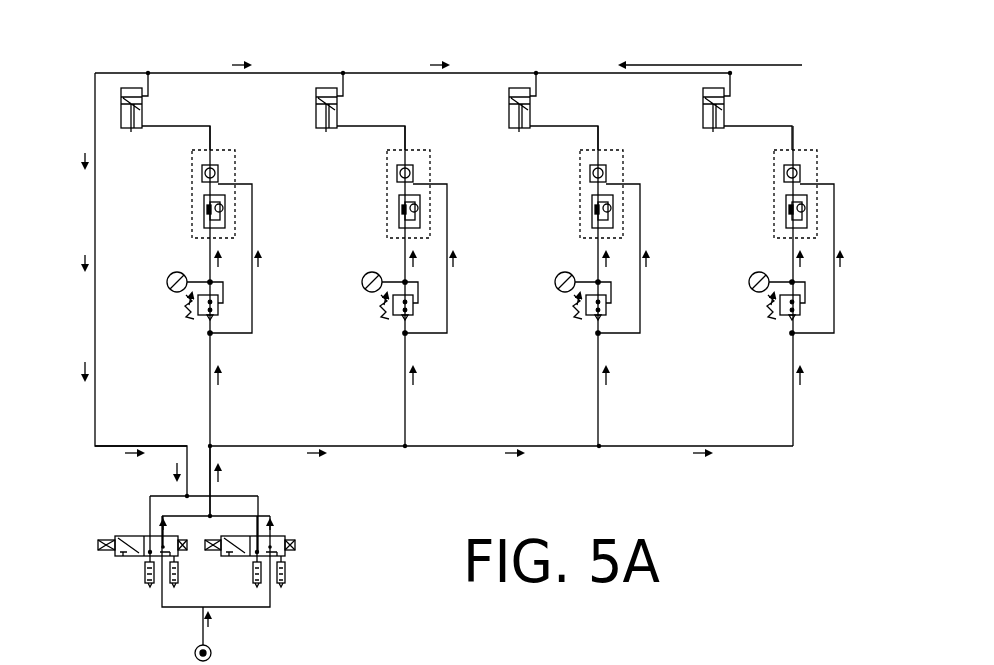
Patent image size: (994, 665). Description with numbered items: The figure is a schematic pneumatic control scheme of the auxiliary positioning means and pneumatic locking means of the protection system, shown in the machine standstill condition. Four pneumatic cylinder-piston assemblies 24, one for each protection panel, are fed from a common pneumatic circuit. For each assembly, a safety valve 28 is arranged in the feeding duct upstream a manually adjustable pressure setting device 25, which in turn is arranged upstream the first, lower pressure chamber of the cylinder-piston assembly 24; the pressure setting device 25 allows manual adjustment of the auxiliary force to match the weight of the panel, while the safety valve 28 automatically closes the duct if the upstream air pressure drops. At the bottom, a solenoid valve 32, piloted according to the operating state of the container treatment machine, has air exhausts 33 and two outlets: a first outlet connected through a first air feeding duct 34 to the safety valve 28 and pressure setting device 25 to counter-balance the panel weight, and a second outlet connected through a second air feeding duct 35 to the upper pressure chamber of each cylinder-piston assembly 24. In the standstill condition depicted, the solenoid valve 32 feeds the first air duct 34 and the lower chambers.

The pneumatic cylinder-piston assembly 24 is at (147, 110).
The safety valve 28 is at (236, 173).
The manually adjustable pressure setting device 25 is at (184, 324).
The second air feeding duct 35 is at (120, 446).
The first air feeding duct 34 is at (212, 452).
The solenoid valve 32 is at (266, 511).
The air exhausts 33 is at (147, 585).